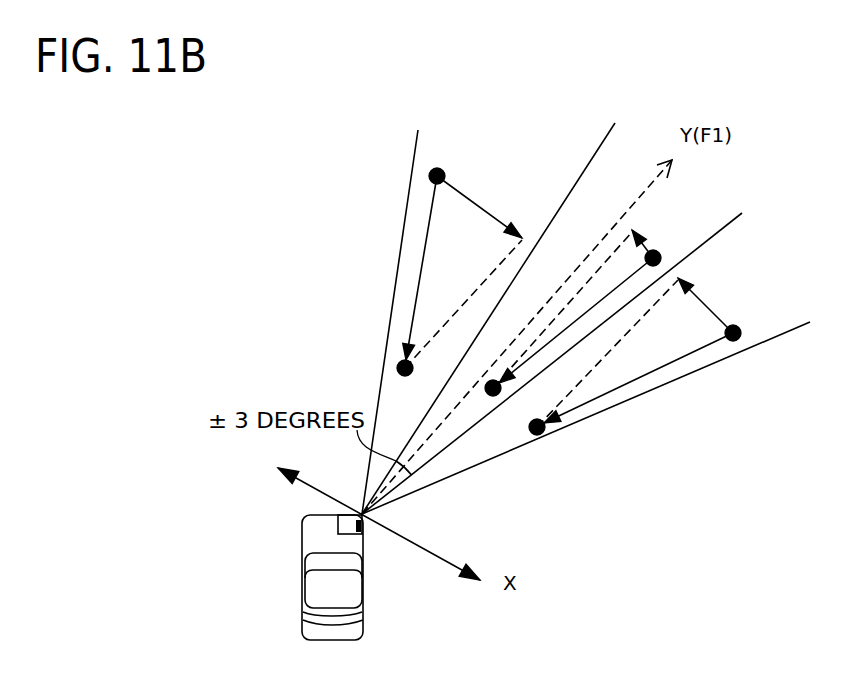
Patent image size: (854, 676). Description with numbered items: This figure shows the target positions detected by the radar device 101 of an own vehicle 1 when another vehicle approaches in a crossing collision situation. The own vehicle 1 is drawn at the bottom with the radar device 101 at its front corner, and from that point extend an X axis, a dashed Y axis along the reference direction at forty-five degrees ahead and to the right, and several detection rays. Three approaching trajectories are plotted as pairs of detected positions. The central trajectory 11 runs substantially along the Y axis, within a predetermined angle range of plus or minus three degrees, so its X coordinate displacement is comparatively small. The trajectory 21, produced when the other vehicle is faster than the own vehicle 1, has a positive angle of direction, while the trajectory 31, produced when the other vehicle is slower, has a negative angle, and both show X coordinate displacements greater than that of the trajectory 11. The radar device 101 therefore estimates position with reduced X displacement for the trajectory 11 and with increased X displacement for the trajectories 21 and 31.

The own vehicle 1 is at (367, 617).
The radar device 101 is at (360, 535).
The detected object 31 (position, displacement Δx31, distance D31) 31 is at (472, 199).
The detected object 11 (position, displacement Δx11, distance D11) 11 is at (640, 239).
The detected object 21 (position, displacement Δx21, distance D21) 21 is at (692, 293).